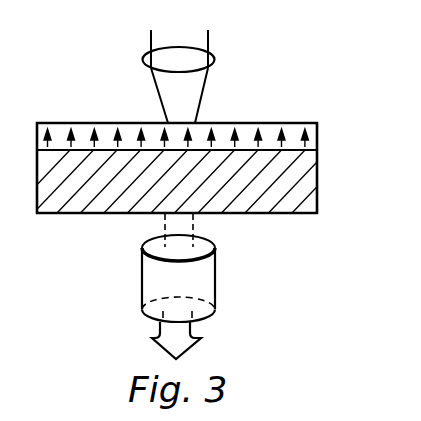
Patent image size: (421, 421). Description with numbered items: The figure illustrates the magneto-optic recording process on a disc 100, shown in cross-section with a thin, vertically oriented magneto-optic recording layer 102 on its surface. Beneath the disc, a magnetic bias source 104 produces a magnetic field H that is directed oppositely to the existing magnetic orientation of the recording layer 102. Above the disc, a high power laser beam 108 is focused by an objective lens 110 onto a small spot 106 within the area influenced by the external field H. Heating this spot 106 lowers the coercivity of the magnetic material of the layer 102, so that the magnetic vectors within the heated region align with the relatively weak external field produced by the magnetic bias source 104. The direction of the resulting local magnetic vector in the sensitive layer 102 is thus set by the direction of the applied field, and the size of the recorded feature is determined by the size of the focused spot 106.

The disc 100 is at (307, 185).
The magneto-optic recording layer 102 is at (317, 142).
The magnetic bias source 104 is at (215, 281).
The spot 106 is at (183, 122).
The high power laser beam 108 is at (208, 30).
The objective lens 110 is at (150, 67).